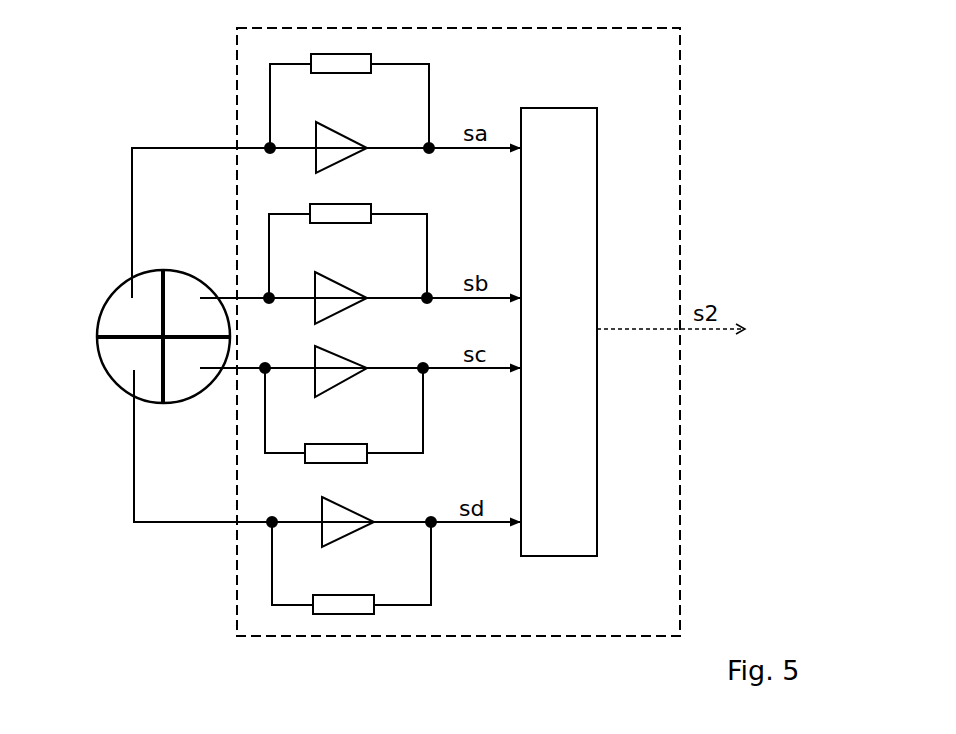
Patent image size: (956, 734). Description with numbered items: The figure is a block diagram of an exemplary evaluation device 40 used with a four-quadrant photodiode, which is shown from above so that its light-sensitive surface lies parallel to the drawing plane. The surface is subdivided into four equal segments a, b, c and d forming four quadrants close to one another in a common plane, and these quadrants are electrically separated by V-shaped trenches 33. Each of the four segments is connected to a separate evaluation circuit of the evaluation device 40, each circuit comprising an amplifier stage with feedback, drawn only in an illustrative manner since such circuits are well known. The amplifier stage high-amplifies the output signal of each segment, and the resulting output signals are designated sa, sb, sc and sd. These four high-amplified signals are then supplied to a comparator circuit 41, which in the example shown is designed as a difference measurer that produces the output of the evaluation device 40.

The V-shaped trenches 33 is at (105, 329).
The evaluation device 40 is at (652, 60).
The comparator circuit 41 is at (588, 136).